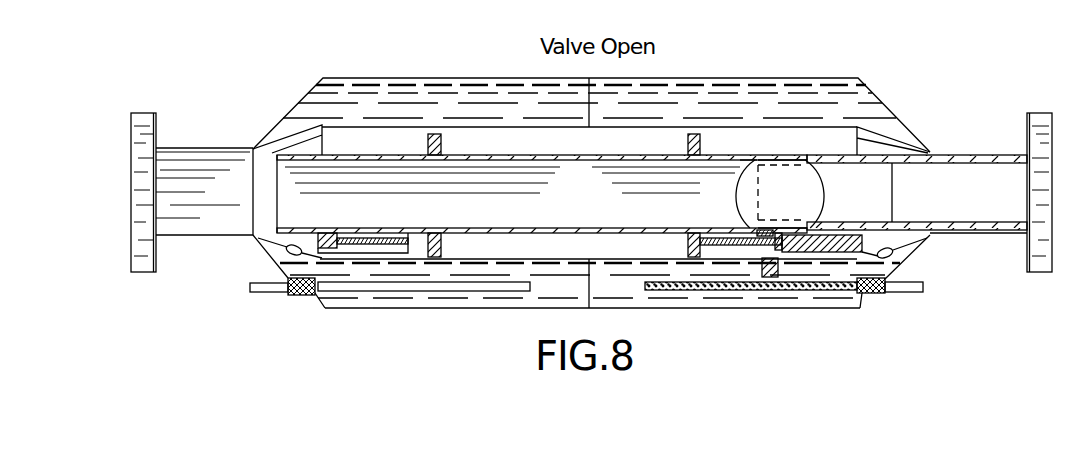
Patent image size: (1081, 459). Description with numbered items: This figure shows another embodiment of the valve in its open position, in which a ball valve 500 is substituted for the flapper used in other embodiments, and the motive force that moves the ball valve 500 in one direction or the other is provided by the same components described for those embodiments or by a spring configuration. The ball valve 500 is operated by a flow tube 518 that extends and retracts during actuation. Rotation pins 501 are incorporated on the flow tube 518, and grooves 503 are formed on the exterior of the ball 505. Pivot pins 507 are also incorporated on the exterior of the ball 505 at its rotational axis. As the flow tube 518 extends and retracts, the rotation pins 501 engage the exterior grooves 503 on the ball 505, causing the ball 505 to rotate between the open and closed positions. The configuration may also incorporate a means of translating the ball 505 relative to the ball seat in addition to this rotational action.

The ball valve 500 is at (790, 195).
The rotation pins 501 is at (757, 158).
The grooves 503 is at (758, 222).
The ball 505 is at (781, 183).
The pivot pins 507 is at (765, 166).
The flow tube 518 is at (886, 222).